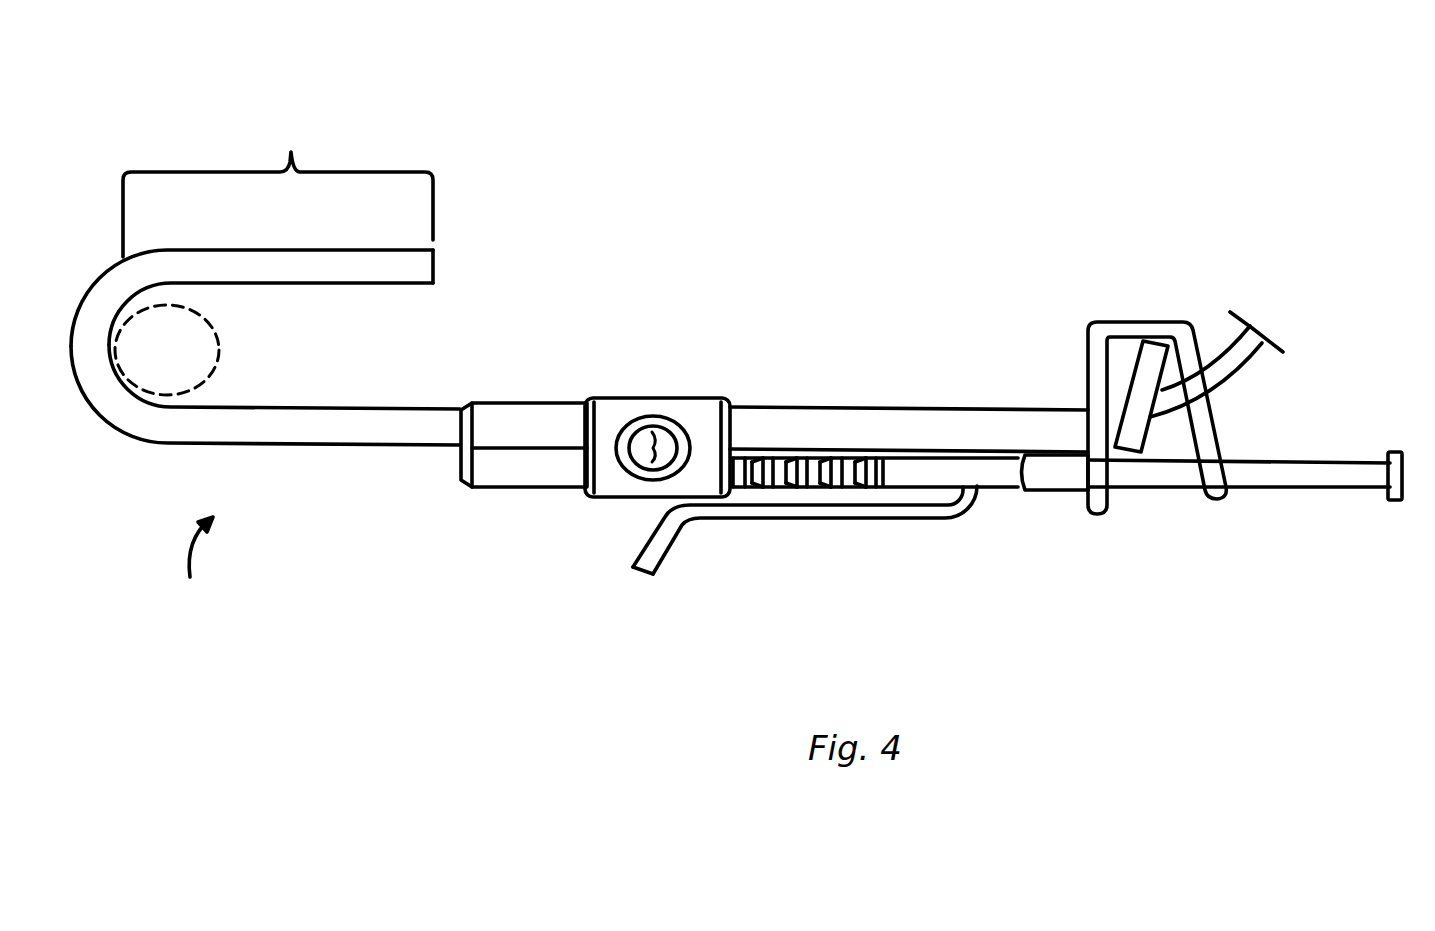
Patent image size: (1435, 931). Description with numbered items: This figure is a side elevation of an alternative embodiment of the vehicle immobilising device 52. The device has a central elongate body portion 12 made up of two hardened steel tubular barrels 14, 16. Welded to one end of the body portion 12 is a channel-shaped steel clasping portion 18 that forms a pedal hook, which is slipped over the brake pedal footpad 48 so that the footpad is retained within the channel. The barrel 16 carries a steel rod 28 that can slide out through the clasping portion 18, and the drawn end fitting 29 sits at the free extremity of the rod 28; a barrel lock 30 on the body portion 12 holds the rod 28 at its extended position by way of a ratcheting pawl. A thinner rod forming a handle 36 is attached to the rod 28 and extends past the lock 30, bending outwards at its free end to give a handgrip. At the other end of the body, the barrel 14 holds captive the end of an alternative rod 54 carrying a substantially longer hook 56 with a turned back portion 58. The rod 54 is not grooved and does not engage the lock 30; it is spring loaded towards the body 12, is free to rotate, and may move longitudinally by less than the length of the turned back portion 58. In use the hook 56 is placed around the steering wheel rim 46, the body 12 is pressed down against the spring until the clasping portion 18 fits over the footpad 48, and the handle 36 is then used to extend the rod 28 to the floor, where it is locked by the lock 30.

The central elongate body portion 12 is at (790, 407).
The tubular barrel 14 is at (937, 408).
The tubular barrel 16 is at (532, 490).
The clasping portion 18 is at (1090, 330).
The steel rod 28 is at (1312, 490).
The end cap 29 is at (1385, 455).
The barrel lock 30 is at (645, 417).
The handle 36 is at (843, 523).
The steering wheel rim 46 is at (213, 333).
The brake pedal footpad 48 is at (1127, 345).
The immobilising device 52 is at (195, 560).
The rod 54 is at (400, 448).
The hook 56 is at (320, 287).
The turned back portion 58 is at (278, 188).